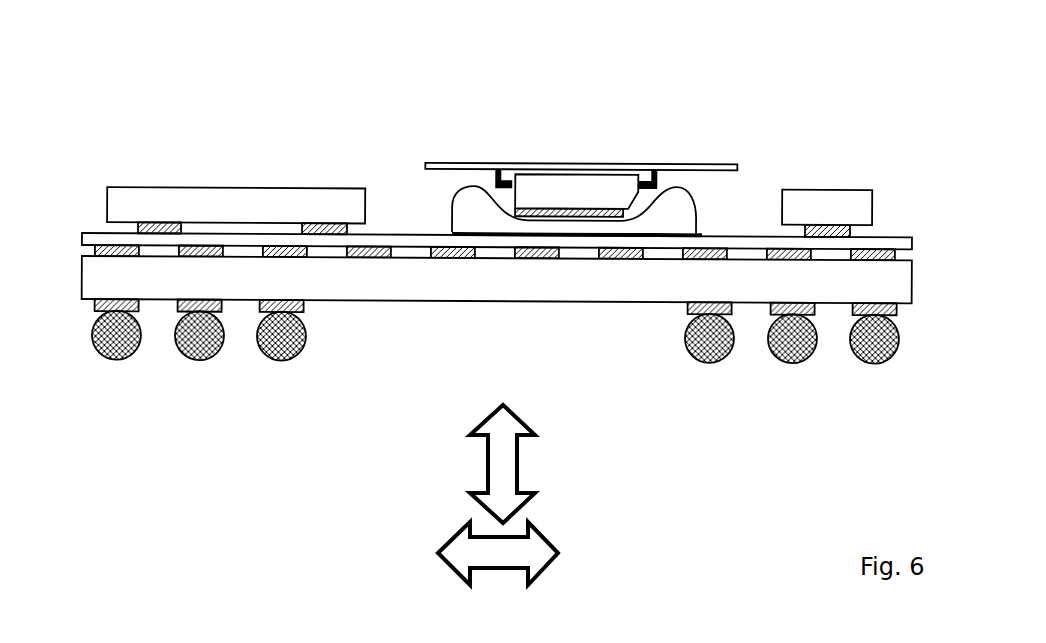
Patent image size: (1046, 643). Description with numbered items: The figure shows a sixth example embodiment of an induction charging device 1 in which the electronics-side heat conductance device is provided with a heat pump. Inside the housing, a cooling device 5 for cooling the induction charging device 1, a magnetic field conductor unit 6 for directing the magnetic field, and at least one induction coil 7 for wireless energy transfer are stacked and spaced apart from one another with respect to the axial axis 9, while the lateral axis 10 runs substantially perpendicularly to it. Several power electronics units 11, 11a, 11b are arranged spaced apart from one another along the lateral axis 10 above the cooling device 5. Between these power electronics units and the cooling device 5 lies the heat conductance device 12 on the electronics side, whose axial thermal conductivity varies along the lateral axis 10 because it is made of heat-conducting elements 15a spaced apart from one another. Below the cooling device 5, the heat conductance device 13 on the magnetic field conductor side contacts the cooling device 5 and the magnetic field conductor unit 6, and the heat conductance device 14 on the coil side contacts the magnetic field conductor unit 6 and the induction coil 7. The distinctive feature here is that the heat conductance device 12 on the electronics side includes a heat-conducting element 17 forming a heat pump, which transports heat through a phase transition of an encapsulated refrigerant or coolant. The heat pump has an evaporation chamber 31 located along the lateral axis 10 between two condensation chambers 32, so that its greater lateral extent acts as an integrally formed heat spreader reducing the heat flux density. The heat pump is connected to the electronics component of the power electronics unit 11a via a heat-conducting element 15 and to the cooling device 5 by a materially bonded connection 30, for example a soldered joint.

The induction charging device 1 is at (112, 112).
The cooling device 5 is at (113, 240).
The magnetic field conductor unit 6 is at (110, 287).
The induction coil 7 is at (267, 362).
The axial axis 9 is at (503, 457).
The lateral axis 10 is at (482, 550).
The power electronics unit 11 is at (173, 195).
The power electronics unit 11a is at (472, 138).
The power electronics unit 11b is at (838, 212).
The heat conductance device on the electronics side 12 is at (890, 235).
The heat conductance device on the magnetic field conductor side 13 is at (900, 257).
The heat conductance device on the coil side 14 is at (908, 315).
The heat-conducting element 15 is at (532, 207).
The heat-conducting element 15a is at (150, 228).
The heat-conducting element 17 is at (733, 187).
The materially bonded connection 30 is at (452, 233).
The evaporation chamber 31 is at (572, 225).
The condensation chambers 32 is at (677, 210).